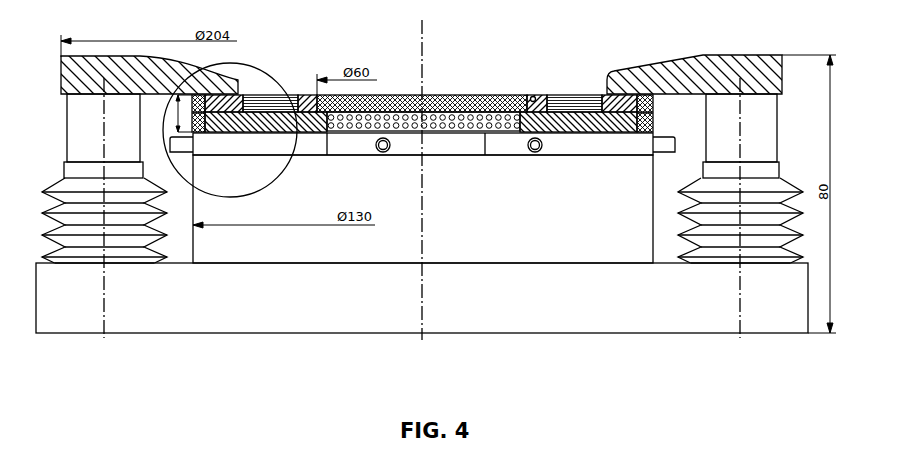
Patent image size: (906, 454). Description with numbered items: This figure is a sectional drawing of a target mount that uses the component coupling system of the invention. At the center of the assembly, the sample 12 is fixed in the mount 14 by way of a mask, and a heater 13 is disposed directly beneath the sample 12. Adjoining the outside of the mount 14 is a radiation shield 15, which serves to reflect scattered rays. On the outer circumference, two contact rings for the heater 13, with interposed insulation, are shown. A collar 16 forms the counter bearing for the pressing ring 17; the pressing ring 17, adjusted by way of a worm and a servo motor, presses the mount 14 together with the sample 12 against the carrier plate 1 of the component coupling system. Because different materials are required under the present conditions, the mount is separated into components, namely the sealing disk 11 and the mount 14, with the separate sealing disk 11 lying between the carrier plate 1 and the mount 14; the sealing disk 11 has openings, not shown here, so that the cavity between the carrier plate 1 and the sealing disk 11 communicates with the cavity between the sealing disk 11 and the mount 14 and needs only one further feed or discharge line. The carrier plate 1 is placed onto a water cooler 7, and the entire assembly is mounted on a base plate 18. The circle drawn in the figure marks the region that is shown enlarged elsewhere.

The carrier plate 1 is at (220, 148).
The water cooler 7 is at (493, 240).
The sealing disk 11 is at (218, 108).
The sample 12 is at (400, 95).
The heater 13 is at (470, 113).
The mount 14 is at (533, 105).
The radiation shield 15 is at (577, 95).
The collar 16 is at (637, 88).
The pressing ring 17 is at (727, 62).
The base plate 18 is at (652, 307).